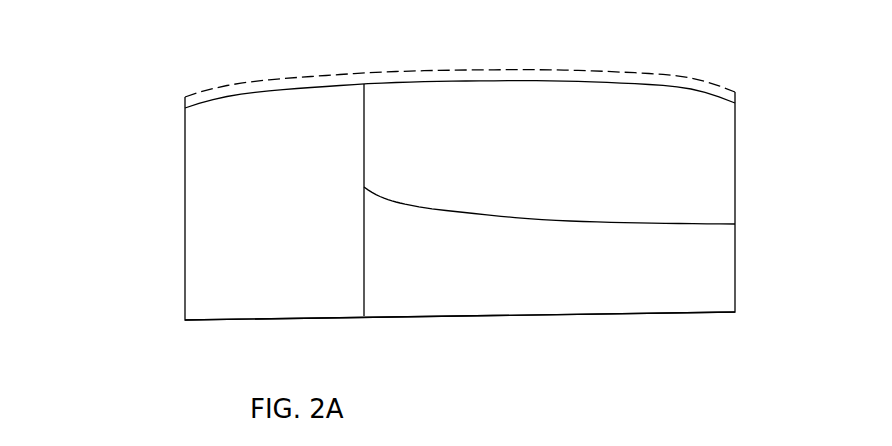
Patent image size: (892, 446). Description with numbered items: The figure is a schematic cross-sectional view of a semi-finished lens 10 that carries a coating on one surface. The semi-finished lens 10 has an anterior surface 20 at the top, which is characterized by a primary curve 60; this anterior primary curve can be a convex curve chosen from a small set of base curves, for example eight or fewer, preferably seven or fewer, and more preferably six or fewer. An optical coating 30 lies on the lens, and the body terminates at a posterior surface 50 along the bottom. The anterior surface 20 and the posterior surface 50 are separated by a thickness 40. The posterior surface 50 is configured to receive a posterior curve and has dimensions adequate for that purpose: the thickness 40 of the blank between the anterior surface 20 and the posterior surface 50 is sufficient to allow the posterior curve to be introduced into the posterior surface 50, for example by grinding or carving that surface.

The semi-finished lens 10 is at (165, 262).
The anterior surface 20 is at (342, 85).
The optical coating 30 is at (597, 75).
The thickness 40 is at (735, 224).
The posterior surface 50 is at (538, 313).
The primary curve 60 is at (705, 82).